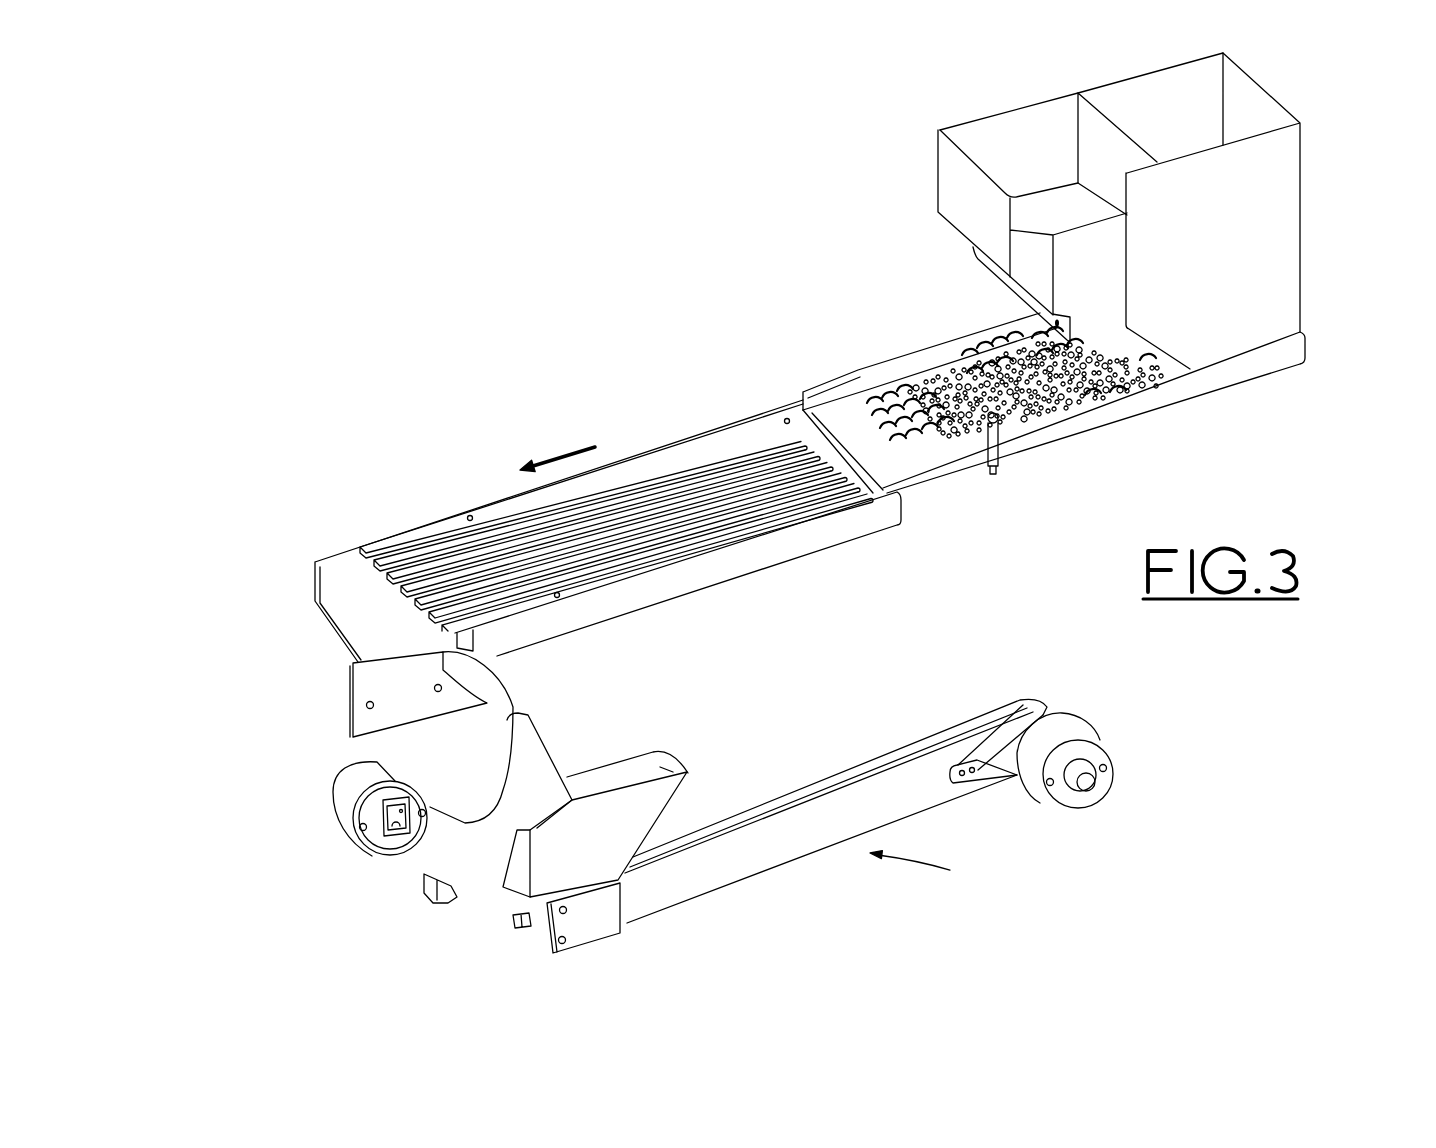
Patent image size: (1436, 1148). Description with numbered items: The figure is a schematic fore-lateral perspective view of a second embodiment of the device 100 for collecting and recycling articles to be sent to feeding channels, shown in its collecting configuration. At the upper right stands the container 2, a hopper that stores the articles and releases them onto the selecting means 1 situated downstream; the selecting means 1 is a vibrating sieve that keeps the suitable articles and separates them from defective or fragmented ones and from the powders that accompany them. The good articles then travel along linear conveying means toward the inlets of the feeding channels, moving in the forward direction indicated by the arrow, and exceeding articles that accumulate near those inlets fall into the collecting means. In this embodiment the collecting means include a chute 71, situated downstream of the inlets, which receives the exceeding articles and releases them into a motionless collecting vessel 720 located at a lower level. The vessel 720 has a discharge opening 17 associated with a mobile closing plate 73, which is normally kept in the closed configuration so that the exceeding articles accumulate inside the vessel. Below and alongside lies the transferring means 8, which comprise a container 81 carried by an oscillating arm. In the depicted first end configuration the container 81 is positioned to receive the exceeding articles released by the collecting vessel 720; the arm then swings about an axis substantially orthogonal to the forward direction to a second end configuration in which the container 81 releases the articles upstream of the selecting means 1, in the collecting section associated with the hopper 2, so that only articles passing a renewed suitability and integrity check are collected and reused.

The device 100 is at (392, 299).
The selecting means 1 is at (825, 352).
The container 2 is at (1320, 204).
The transferring means 8 is at (880, 690).
The discharge opening 17 is at (528, 683).
The chute 71 is at (338, 605).
The motionless collecting vessel 720 is at (417, 764).
The mobile closing plate 73 is at (533, 762).
The container 81 is at (607, 840).